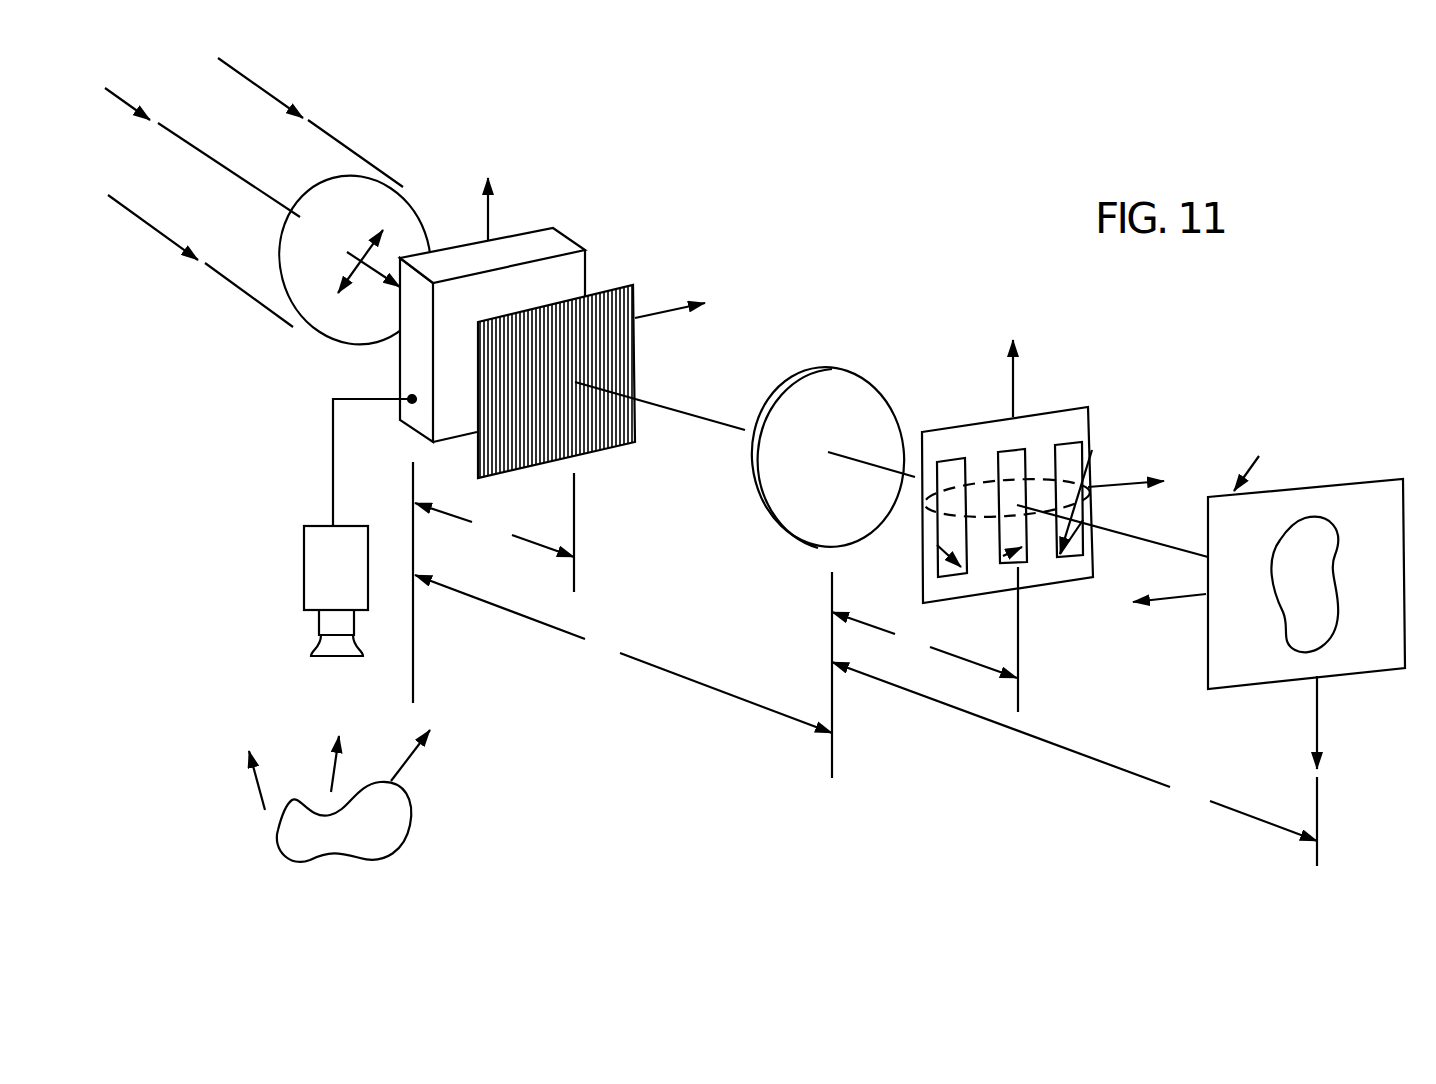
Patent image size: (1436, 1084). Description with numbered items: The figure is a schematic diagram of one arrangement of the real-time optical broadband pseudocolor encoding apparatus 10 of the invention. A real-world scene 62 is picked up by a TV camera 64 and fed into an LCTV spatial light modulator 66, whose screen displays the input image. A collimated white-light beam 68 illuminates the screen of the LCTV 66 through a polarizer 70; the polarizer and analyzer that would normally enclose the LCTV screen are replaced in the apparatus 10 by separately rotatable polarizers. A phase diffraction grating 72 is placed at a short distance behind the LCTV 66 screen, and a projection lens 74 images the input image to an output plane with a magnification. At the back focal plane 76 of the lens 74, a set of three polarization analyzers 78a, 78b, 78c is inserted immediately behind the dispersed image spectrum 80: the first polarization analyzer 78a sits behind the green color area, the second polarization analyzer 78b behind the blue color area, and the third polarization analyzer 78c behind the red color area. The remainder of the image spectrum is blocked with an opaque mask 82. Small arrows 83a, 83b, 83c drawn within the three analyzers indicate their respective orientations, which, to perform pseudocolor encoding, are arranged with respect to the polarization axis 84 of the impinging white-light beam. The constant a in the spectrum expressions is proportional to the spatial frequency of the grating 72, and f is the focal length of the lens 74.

The pseudocolor encoding apparatus 10 is at (945, 148).
The real-world scene 62 is at (417, 820).
The TV camera 64 is at (302, 547).
The LCTV spatial light modulator 66 is at (572, 237).
The collimated white-light beam 68 is at (282, 100).
The polarizer 70 is at (412, 190).
The phase diffraction grating 72 is at (617, 283).
The projection lens 74 is at (790, 378).
The back focal plane 76 is at (1043, 412).
The first polarization analyzer 78a is at (947, 577).
The second polarization analyzer 78b is at (1015, 567).
The third polarization analyzer 78c is at (1067, 562).
The dispersed image spectrum 80 is at (1094, 450).
The opaque mask 82 is at (982, 432).
The blue polarization direction arrow 83a is at (937, 567).
The green polarization direction arrow 83b is at (1013, 565).
The red polarization direction arrow 83c is at (1093, 567).
The polarization axis 84 is at (337, 270).